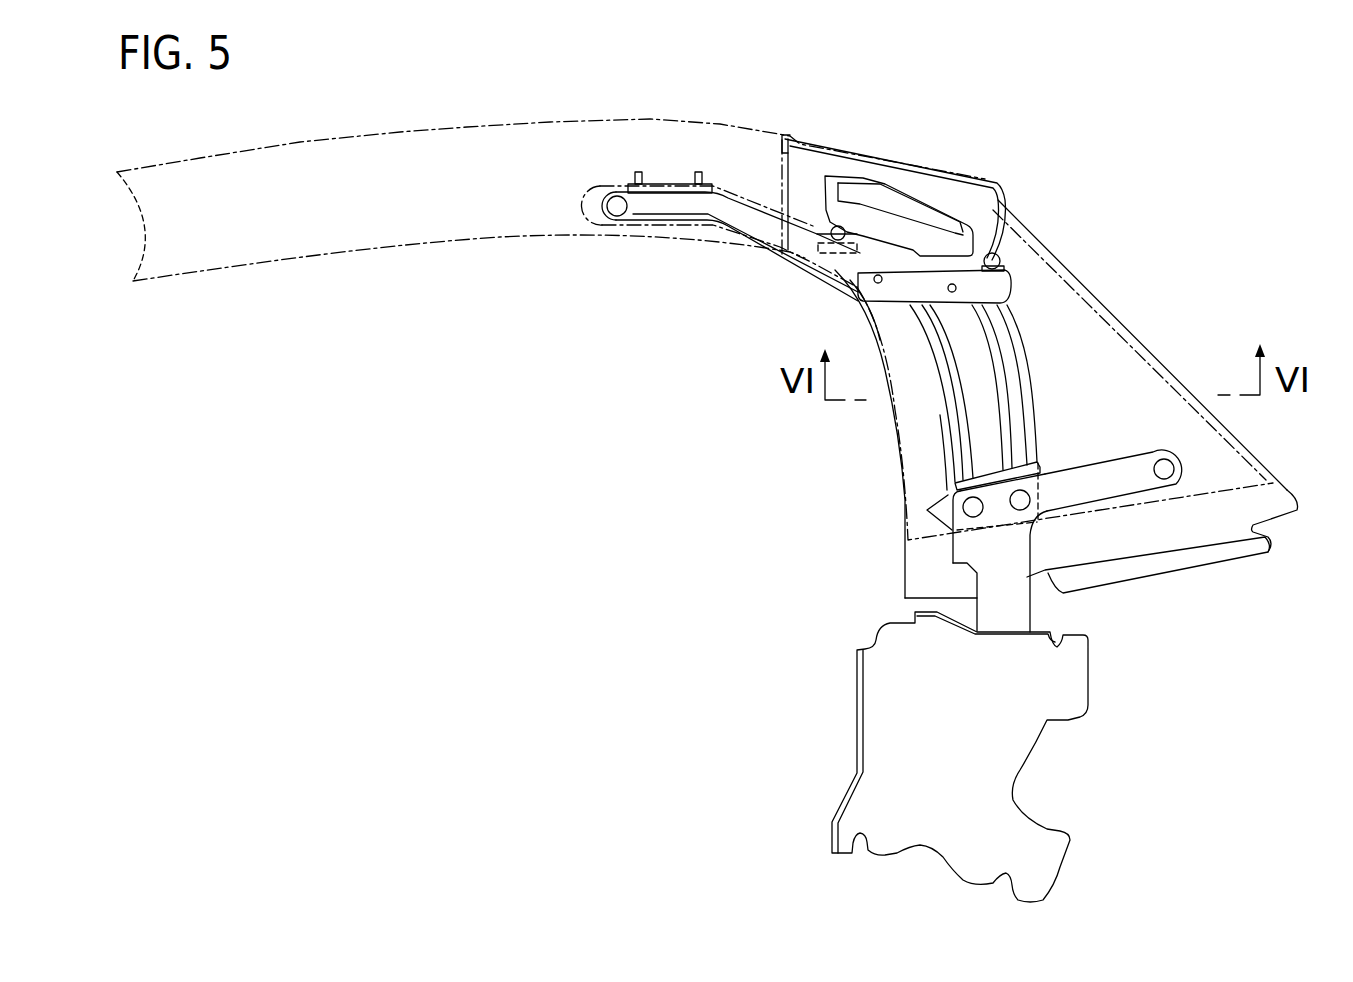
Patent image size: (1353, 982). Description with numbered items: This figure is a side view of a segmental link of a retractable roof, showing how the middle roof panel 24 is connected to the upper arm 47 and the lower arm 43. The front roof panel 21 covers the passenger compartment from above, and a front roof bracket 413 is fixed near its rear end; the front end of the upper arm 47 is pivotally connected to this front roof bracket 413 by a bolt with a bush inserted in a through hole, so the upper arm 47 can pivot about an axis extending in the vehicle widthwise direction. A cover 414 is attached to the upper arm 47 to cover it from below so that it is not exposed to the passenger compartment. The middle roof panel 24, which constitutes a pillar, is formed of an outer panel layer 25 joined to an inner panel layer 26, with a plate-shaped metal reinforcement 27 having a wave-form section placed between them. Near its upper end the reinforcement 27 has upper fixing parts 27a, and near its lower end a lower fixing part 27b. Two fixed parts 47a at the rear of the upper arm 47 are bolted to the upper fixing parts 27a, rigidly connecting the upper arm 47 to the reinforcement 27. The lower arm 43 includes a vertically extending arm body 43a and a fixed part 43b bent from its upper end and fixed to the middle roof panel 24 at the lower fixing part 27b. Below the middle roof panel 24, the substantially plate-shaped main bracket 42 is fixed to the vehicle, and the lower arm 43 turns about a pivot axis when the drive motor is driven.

The front roof panel 21 is at (466, 118).
The middle roof panel 24 is at (887, 152).
The outer panel layer 25 is at (1267, 463).
The inner panel layer 26 is at (1098, 297).
The reinforcement 27 is at (946, 420).
The upper fixing part 27a is at (830, 232).
The lower fixing part 27b is at (948, 498).
The main bracket 42 is at (1068, 718).
The lower arm 43 is at (960, 567).
The arm body 43a is at (1030, 620).
The fixed part 43b is at (1125, 462).
The upper arm 47 is at (740, 220).
The fixed part 47a is at (1005, 268).
The front roof bracket 413 is at (667, 183).
The cover 414 is at (658, 236).